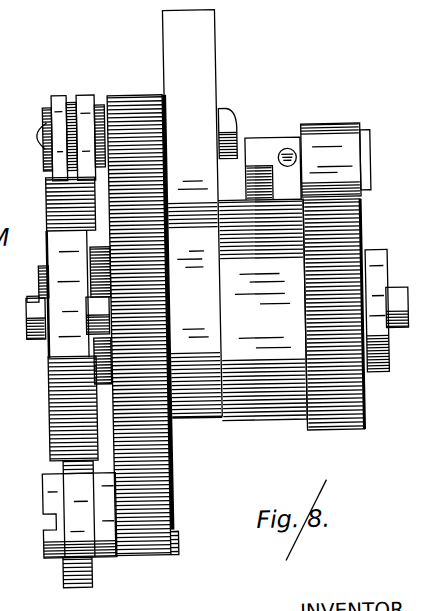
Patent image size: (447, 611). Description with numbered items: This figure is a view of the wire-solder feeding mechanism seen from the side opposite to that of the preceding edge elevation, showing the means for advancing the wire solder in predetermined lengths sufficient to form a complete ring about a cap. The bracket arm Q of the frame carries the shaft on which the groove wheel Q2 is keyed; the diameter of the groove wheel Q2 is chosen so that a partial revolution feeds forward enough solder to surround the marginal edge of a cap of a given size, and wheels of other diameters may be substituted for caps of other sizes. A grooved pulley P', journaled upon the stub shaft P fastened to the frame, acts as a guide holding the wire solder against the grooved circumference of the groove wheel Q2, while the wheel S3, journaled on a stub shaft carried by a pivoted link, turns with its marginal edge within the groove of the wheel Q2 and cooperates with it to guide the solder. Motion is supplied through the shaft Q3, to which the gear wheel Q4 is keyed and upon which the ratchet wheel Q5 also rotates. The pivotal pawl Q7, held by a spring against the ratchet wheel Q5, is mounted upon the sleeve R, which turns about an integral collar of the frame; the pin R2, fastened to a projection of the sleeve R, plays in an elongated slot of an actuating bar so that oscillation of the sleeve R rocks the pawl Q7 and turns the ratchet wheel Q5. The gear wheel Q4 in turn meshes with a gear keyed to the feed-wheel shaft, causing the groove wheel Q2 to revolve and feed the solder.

The stub shaft P is at (23, 145).
The grooved pulley P' is at (73, 143).
The bracket arm Q is at (192, 214).
The groove wheel Q2 is at (49, 409).
The shaft Q3 is at (46, 446).
The gear wheel Q4 is at (176, 478).
The ratchet wheel Q5 is at (350, 434).
The pivotal pawl Q7 is at (331, 126).
The sleeve R is at (283, 423).
The pin R2 is at (394, 292).
The wheel S3 is at (54, 560).